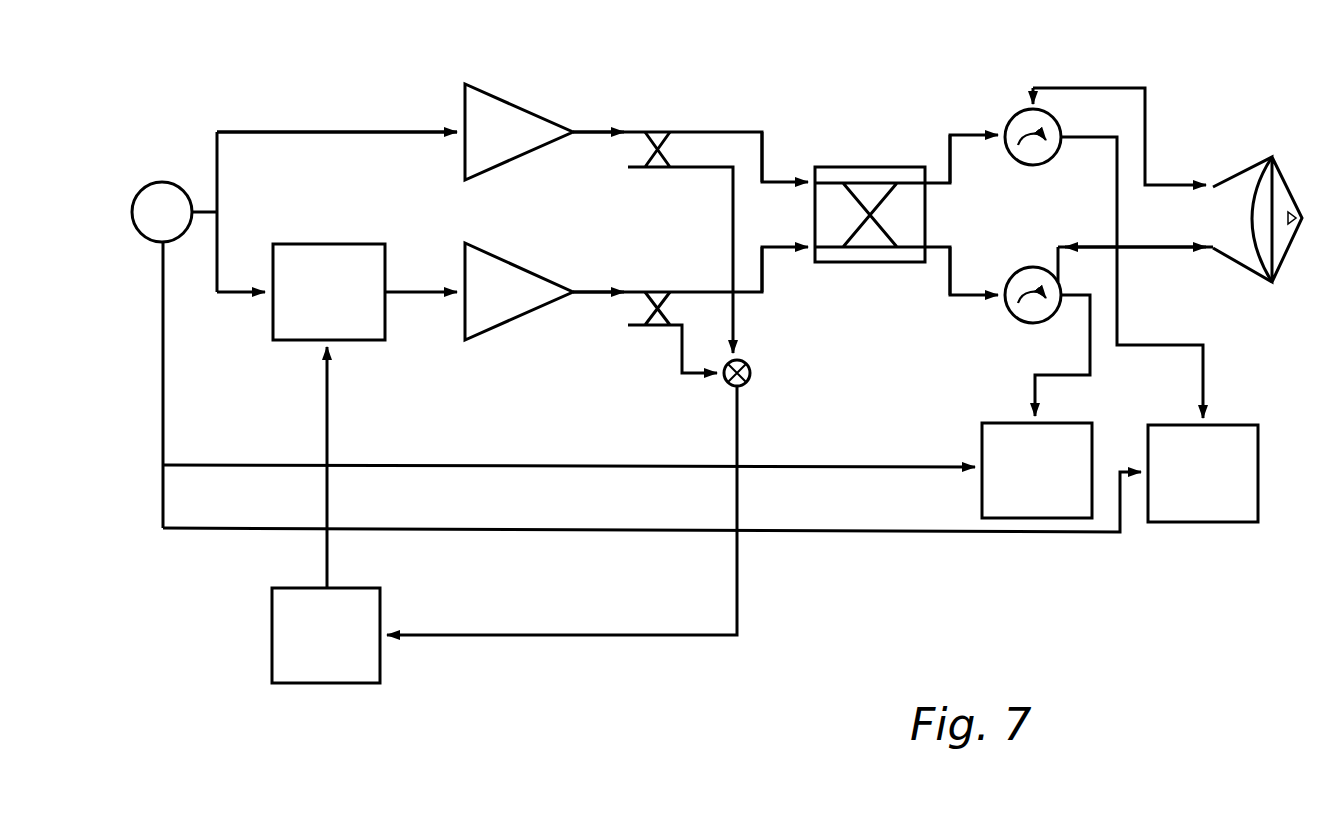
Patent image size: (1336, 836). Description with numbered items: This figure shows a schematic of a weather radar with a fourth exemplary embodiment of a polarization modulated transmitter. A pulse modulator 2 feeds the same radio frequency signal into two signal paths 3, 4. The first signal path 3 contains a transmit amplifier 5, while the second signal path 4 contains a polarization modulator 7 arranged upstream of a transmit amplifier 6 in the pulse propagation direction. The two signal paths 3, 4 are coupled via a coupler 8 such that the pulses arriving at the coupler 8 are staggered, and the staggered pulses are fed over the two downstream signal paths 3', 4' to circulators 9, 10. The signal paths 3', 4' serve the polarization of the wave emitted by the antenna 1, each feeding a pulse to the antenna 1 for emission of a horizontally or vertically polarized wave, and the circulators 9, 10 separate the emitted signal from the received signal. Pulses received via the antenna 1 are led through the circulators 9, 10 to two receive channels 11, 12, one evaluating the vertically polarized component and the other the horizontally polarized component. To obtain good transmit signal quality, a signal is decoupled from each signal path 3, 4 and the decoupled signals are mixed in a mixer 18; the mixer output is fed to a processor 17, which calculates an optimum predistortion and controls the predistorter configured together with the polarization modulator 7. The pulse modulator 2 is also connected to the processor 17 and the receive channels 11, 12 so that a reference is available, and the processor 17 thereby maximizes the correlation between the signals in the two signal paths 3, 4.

The antenna 1 is at (1286, 160).
The pulse modulator 2 is at (150, 185).
The signal path 3 is at (785, 117).
The signal path downstream of the coupler 3' is at (955, 104).
The signal path 4 is at (790, 299).
The signal path downstream of the coupler 4' is at (942, 321).
The transmit amplifier 5 is at (500, 118).
The transmit amplifier 6 is at (508, 300).
The polarization modulator 7 is at (293, 342).
The coupler 8 is at (878, 167).
The circulator 9 is at (1023, 170).
The circulator 10 is at (1020, 326).
The receive channel 11 is at (990, 492).
The receive channel 12 is at (1258, 485).
The processor 17 is at (312, 668).
The mixer 18 is at (748, 386).